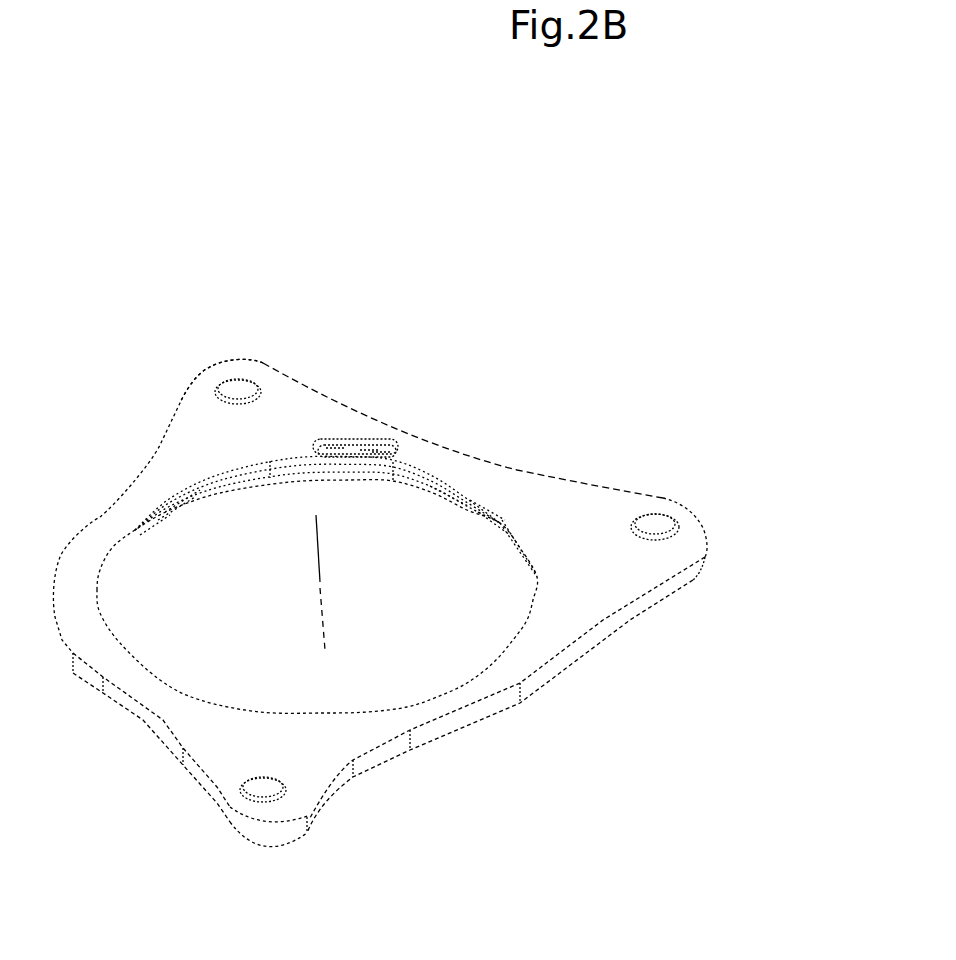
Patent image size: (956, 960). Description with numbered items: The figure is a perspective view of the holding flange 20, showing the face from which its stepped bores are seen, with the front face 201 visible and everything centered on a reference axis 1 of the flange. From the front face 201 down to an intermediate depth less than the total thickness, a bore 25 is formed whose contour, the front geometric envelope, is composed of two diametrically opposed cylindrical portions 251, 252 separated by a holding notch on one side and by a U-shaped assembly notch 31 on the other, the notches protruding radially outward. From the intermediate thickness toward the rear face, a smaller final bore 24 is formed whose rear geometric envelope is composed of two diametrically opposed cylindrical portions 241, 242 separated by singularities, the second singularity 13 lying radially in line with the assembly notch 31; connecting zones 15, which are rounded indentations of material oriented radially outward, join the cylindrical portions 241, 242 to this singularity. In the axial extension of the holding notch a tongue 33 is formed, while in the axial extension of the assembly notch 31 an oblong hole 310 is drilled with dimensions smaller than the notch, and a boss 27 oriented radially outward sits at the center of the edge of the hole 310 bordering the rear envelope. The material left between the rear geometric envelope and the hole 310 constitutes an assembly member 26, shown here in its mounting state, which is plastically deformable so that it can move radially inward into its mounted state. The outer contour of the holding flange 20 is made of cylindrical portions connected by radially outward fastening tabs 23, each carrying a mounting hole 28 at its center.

The reference axis 1 is at (319, 548).
The second singularity 13 is at (319, 450).
The connecting zones 15 is at (291, 453).
The holding flange 20 is at (467, 197).
The front face 201 is at (374, 258).
The fastening tabs 23 is at (192, 388).
The final bore 24 is at (450, 478).
The cylindrical portion 241 is at (180, 527).
The cylindrical portion 242 is at (501, 513).
The bore 25 is at (174, 518).
The cylindrical portion 251 is at (141, 533).
The cylindrical portion 252 is at (505, 525).
The assembly member 26 is at (336, 446).
The boss 27 is at (353, 450).
The mounting holes 28 is at (237, 378).
The assembly notch 31 is at (381, 450).
The hole 310 is at (369, 450).
The tongue 33 is at (272, 707).